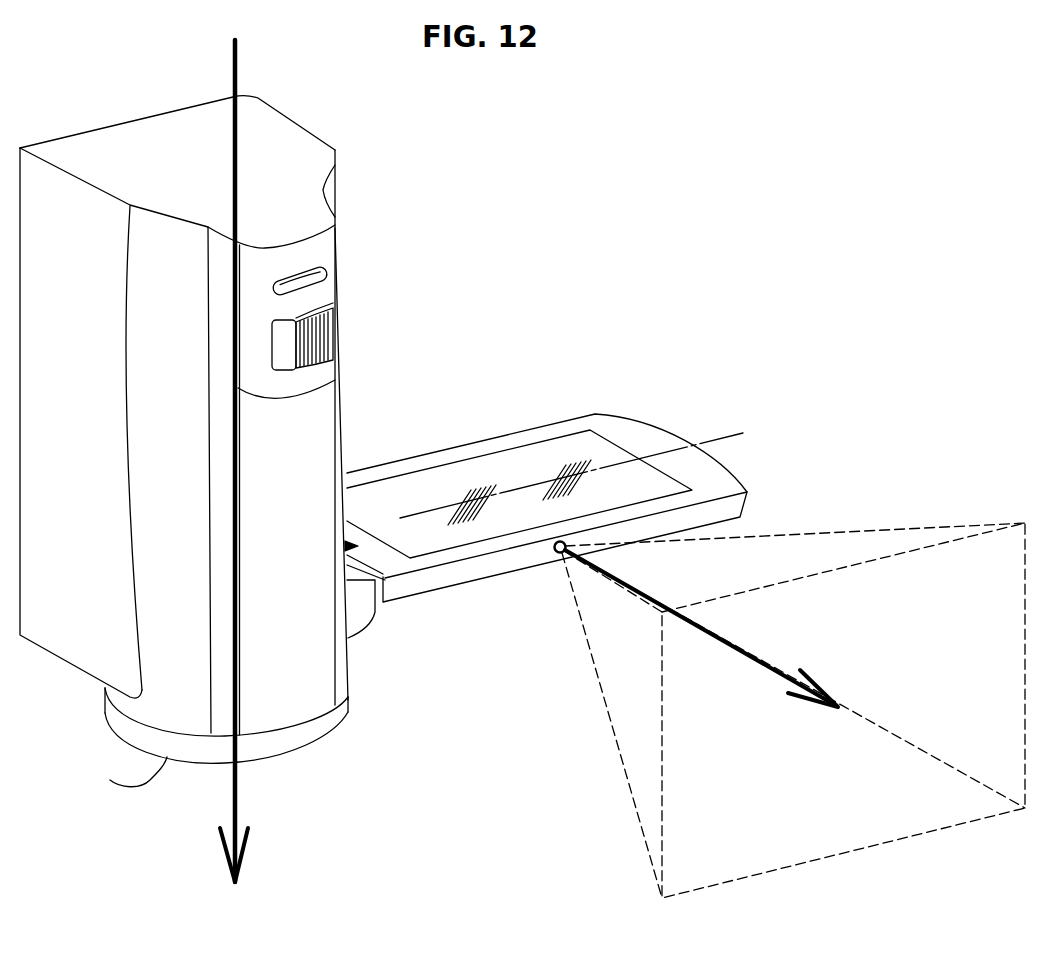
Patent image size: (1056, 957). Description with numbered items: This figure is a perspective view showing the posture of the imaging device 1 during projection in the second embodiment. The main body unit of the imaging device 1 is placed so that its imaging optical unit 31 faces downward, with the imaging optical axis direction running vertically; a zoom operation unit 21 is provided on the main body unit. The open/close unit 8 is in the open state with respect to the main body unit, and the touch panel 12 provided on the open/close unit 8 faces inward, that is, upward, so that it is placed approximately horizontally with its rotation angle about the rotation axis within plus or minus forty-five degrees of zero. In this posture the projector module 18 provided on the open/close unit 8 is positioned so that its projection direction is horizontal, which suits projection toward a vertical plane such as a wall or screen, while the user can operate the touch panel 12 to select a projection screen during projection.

The imaging device 1 is at (531, 228).
The open/close unit 8 is at (540, 428).
The touch panel 12 is at (425, 497).
The projector module 18 is at (556, 552).
The zoom operation unit 21 is at (334, 330).
The imaging optical unit 31 is at (110, 780).